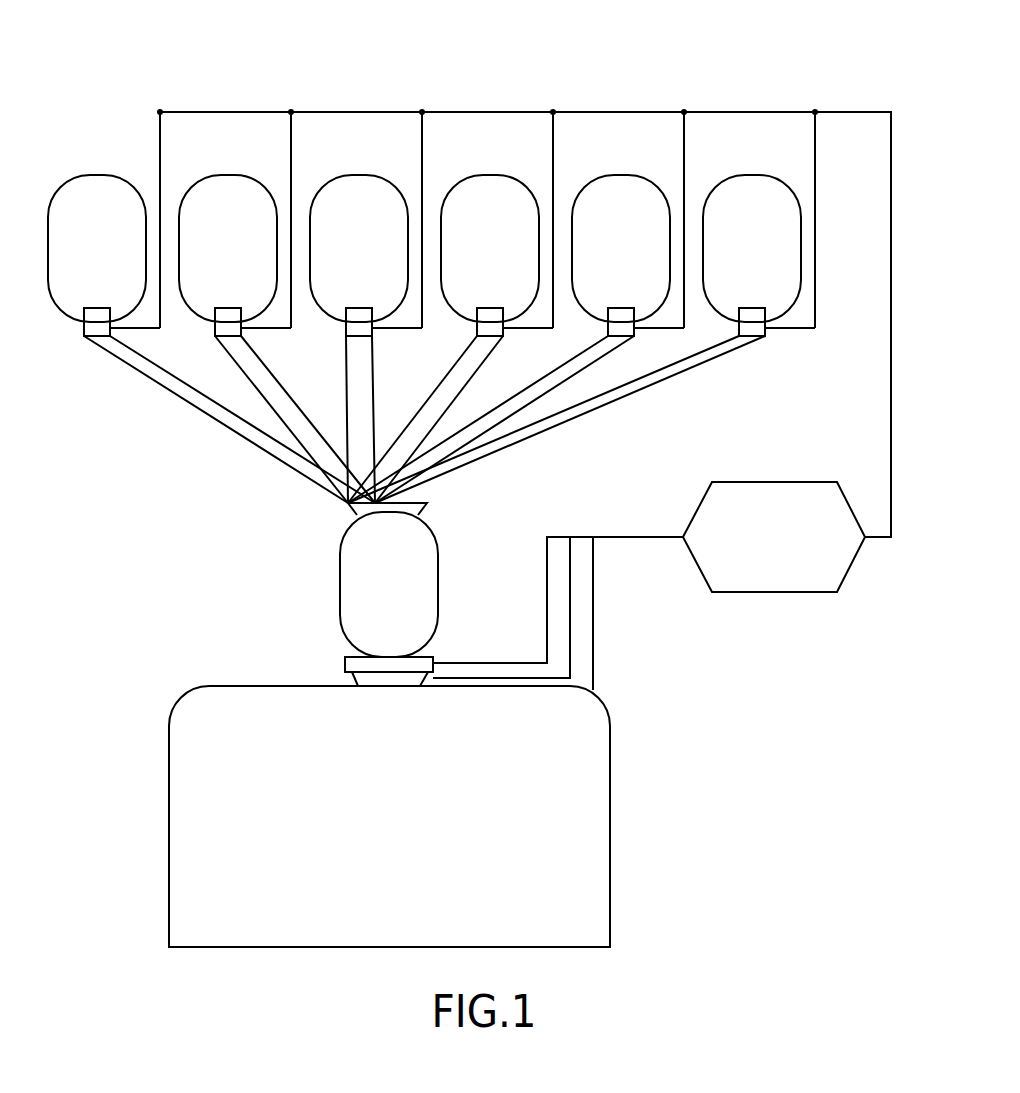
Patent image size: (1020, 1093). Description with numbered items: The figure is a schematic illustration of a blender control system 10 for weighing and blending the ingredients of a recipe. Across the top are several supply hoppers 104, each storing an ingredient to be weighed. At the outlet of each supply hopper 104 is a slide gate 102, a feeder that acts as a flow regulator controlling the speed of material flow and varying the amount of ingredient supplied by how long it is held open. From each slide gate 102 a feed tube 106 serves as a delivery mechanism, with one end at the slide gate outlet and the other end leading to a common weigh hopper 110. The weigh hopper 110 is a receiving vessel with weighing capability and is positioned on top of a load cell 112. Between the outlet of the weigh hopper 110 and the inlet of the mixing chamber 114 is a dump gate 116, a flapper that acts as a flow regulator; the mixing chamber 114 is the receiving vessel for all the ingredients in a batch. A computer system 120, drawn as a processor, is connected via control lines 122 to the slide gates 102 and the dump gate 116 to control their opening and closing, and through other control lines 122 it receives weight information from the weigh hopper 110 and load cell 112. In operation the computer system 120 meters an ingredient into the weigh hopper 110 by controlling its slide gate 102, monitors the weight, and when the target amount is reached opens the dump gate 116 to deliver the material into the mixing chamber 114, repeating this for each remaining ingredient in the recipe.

The blender control system 10 is at (467, 58).
The slide gate 102 is at (85, 340).
The supply hopper 104 is at (97, 175).
The feed tube 106 is at (182, 395).
The weigh hopper 110 is at (341, 585).
The load cell 112 is at (428, 655).
The mixing chamber 114 is at (610, 833).
The dump gate 116 is at (352, 679).
The computer system 120 is at (772, 482).
The control lines 122 is at (746, 112).